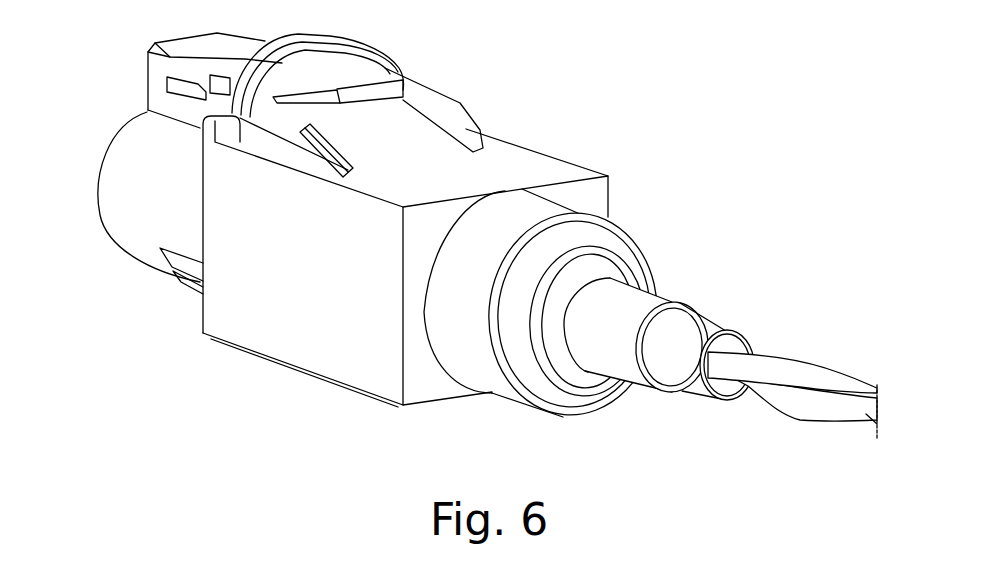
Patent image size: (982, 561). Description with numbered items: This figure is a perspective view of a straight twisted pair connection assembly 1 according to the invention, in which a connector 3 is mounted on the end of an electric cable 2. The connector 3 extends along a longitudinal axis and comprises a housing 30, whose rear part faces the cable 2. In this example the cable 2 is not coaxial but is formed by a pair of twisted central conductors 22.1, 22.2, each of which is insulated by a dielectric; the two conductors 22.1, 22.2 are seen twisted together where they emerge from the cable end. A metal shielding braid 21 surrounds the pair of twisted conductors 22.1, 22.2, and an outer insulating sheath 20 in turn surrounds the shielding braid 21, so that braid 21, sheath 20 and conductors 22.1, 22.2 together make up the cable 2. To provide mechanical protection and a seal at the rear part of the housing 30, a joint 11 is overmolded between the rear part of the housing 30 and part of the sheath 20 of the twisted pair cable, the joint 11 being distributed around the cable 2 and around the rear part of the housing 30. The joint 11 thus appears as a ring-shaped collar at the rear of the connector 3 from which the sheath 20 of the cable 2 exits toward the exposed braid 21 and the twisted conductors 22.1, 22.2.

The connection assembly 1 is at (120, 80).
The cable 2 is at (884, 290).
The connector 3 is at (519, 124).
The joint 11 is at (577, 238).
The outer insulating sheath 20 is at (660, 293).
The metal shielding braid 21 is at (718, 400).
The twisted central conductor 22.1 is at (787, 405).
The twisted central conductor 22.2 is at (793, 355).
The housing 30 is at (213, 308).